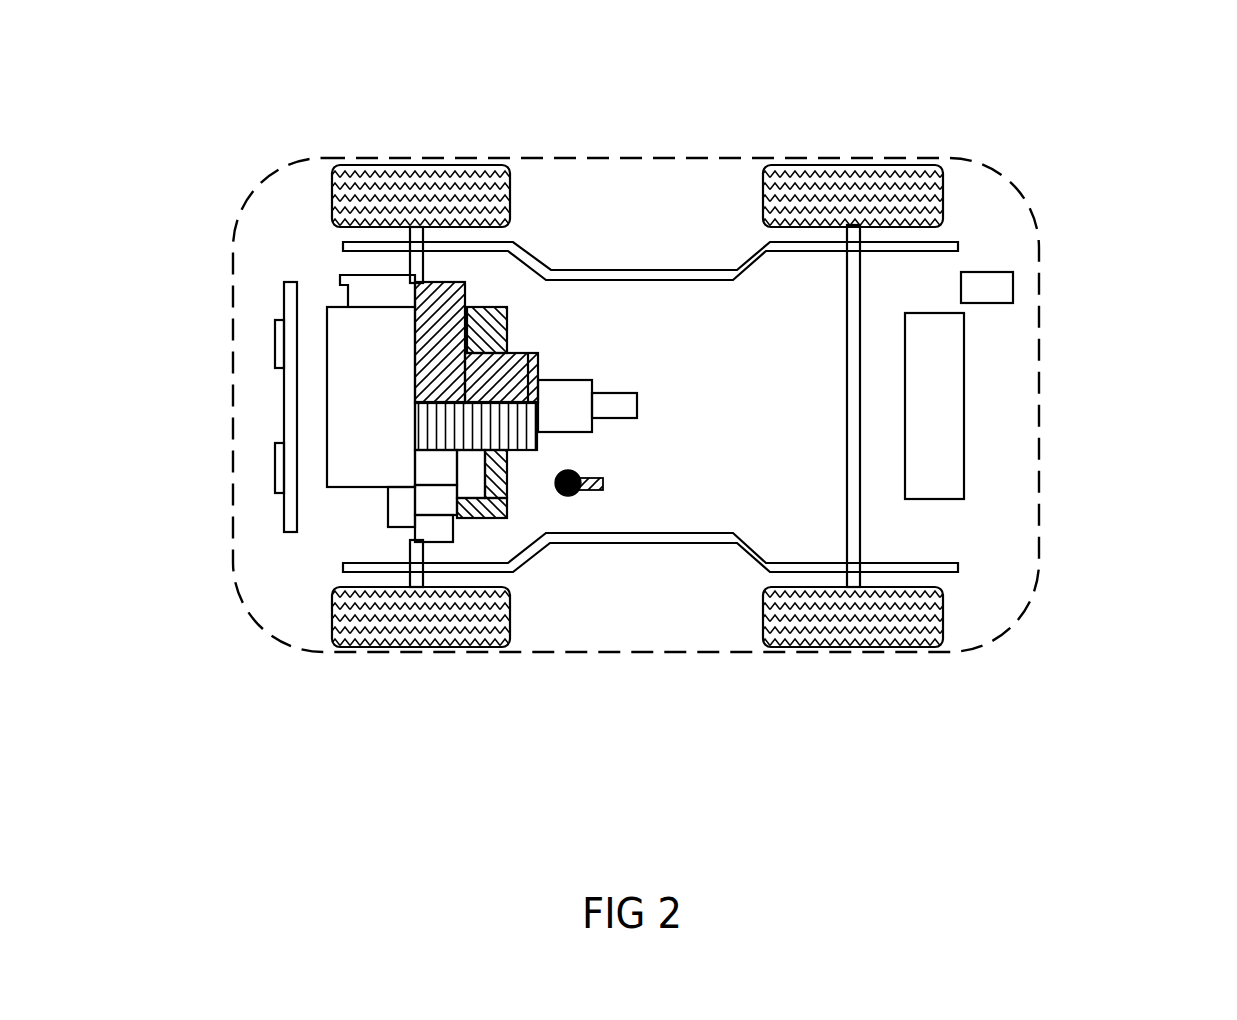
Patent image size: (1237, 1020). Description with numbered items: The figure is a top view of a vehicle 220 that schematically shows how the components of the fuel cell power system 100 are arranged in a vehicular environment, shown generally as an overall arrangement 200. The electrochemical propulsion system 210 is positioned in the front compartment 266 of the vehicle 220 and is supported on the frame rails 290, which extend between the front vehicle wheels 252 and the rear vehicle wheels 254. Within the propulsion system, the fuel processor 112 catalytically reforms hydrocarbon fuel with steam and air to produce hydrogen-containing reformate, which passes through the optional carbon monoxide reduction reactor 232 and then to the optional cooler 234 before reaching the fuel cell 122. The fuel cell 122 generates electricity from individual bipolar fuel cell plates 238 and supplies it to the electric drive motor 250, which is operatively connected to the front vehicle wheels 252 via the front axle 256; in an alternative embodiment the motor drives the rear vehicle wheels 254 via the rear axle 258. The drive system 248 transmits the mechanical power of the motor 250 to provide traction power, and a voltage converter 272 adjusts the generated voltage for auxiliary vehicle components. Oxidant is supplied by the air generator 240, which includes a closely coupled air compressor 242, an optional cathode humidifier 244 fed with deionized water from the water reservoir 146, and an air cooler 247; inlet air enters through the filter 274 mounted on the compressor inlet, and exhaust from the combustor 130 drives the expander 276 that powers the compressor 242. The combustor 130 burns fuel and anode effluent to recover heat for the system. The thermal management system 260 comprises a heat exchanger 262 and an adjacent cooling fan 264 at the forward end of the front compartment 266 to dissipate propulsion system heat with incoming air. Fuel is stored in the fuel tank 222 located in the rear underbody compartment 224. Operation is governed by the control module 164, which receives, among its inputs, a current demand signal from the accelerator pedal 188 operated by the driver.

The fuel cell power system 100 is at (370, 502).
The fuel processor 112 is at (330, 310).
The fuel cell stack system 122 is at (530, 458).
The combustor 130 is at (368, 278).
The water reservoir 146 is at (1003, 290).
The control module 164 is at (628, 405).
The accelerator pedal 188 is at (580, 492).
The vehicle system 200 is at (1064, 149).
The electrochemical propulsion system 210 is at (356, 517).
The vehicle 220 is at (679, 155).
The fuel tank 222 is at (950, 413).
The rear underbody compartment 224 is at (987, 538).
The carbon monoxide reduction reactor 232 is at (505, 310).
The cooler 234 is at (350, 242).
The bipolar fuel cell plates 238 is at (510, 403).
The air generator 240 is at (478, 498).
The air compressor 242 is at (420, 480).
The cathode humidifier 244 is at (473, 490).
The air cooler 247 is at (392, 502).
The drive system 248 is at (479, 537).
The electric drive motor 250 is at (485, 367).
The front vehicle wheels 252 is at (483, 268).
The rear vehicle wheels 254 is at (922, 176).
The front axle 256 is at (403, 265).
The rear axle 258 is at (850, 415).
The thermal management system 260 is at (281, 315).
The heat exchanger 262 is at (278, 500).
The cooling fan 264 is at (275, 468).
The front compartment 266 is at (500, 307).
The voltage converter 272 is at (577, 388).
The filter 274 is at (448, 540).
The expander 276 is at (396, 506).
The frame rails 290 is at (437, 247).